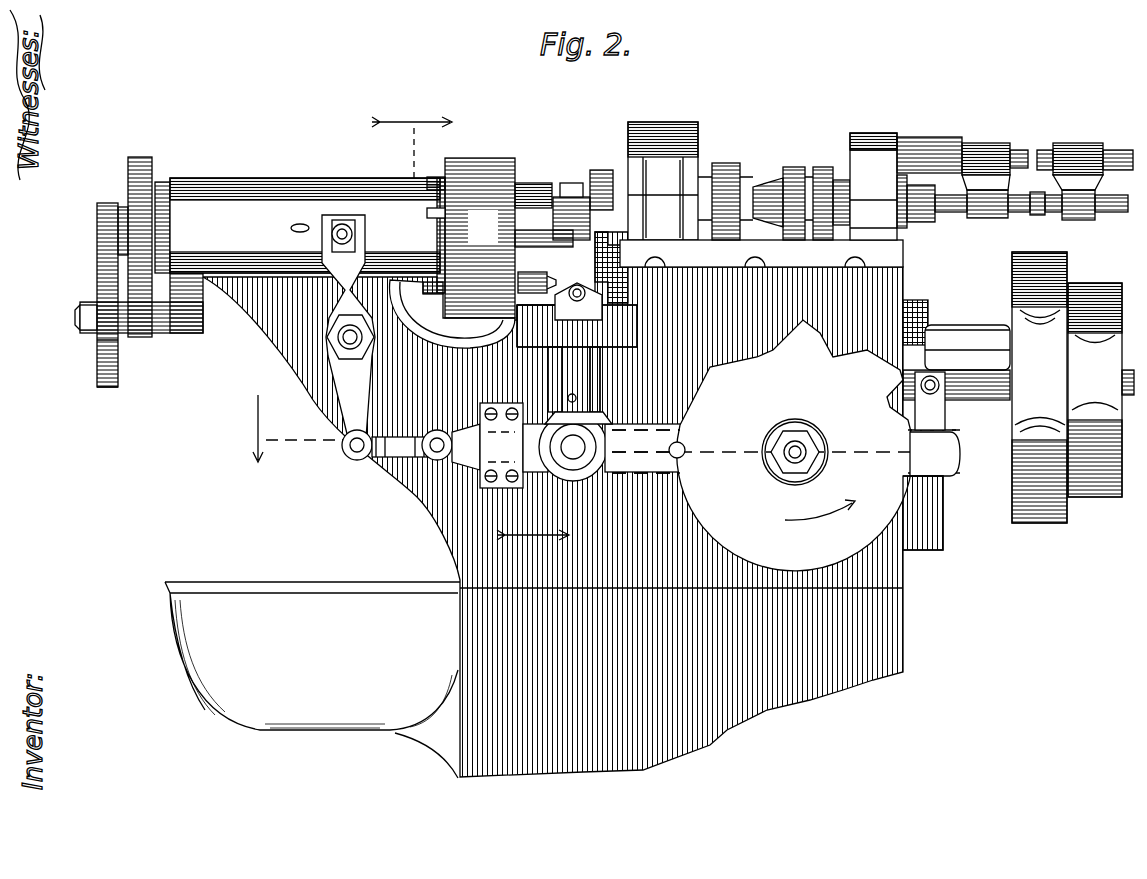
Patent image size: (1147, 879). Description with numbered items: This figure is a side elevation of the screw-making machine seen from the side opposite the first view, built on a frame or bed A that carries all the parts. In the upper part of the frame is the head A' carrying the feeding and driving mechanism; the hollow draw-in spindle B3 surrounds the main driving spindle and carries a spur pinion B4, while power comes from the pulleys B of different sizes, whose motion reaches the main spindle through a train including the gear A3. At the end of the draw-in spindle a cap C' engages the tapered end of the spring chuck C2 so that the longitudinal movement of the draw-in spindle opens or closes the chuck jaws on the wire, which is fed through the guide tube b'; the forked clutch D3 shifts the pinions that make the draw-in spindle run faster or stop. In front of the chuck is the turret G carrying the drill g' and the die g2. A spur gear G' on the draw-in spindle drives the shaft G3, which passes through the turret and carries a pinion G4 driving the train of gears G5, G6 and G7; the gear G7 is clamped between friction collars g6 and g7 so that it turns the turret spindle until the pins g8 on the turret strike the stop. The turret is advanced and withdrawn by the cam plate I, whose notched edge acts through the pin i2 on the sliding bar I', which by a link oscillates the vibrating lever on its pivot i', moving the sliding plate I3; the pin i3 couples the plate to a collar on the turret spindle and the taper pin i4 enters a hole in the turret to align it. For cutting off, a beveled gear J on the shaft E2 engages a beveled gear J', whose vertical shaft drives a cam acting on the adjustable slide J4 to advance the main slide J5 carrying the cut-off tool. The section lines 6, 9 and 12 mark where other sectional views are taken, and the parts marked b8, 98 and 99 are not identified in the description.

The frame or bed A is at (534, 505).
The head A' is at (873, 170).
The gear A3 is at (838, 172).
The pulleys B is at (1073, 387).
The draw-in spindle B3 is at (768, 190).
The spur pinion B4 is at (822, 175).
The guide tube b' is at (1015, 194).
The shaft couplings b8 is at (952, 212).
The cap C' is at (605, 170).
The spring chuck C2 is at (596, 162).
The forked clutch D3 is at (927, 425).
The shaft E2 is at (581, 460).
The turret G is at (480, 238).
The spur gear G' is at (726, 184).
The shaft G3 is at (527, 230).
The pinion G4 is at (103, 215).
The gear G5 is at (100, 363).
The gear G6 is at (138, 335).
The gear G7 is at (140, 175).
The drill g' is at (540, 272).
The die g2 is at (522, 183).
The friction collar g6 is at (162, 182).
The friction collar g7 is at (123, 207).
The pins g8 is at (433, 177).
The cam plate I is at (786, 445).
The sliding bar I' is at (782, 448).
The sliding plate I3 is at (307, 235).
The pivot i' is at (294, 326).
The pin i2 is at (682, 444).
The pin i3 is at (300, 223).
The taper pin i4 is at (440, 212).
The beveled gear J is at (566, 364).
The beveled gear J' is at (604, 393).
The adjustable slide J4 is at (582, 310).
The main slide J5 is at (587, 258).
The pin 98 is at (433, 294).
The hook 99 is at (405, 292).
The section line 6 is at (286, 428).
The section line 9 is at (535, 547).
The section line 12 is at (412, 135).